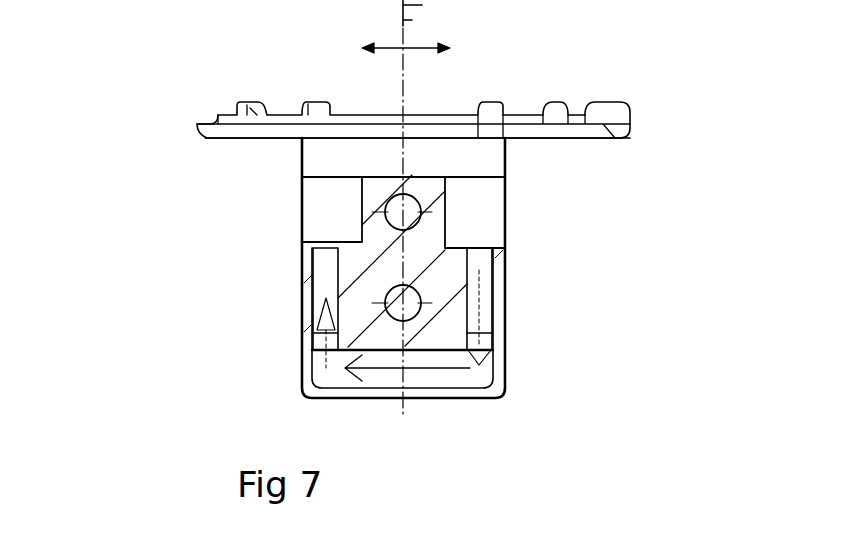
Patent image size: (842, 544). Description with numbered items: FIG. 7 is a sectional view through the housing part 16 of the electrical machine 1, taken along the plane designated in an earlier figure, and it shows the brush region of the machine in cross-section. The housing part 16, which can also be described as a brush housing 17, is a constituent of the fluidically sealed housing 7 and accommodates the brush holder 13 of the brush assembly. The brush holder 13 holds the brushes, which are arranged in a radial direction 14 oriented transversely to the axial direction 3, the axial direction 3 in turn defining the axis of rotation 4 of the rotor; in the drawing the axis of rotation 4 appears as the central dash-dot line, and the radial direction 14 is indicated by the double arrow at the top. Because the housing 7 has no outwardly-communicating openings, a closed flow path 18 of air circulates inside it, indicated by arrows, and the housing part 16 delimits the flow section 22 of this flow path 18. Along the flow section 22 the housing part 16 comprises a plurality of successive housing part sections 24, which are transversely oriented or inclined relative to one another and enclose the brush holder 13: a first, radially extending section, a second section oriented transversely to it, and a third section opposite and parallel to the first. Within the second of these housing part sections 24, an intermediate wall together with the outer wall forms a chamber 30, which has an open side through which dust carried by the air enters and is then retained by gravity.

The electrical machine 1 is at (125, 40).
The axial direction 3 is at (447, 13).
The axis of rotation 4 is at (447, 13).
The housing 7 is at (200, 262).
The brush holder 13 is at (435, 246).
The radial direction 14 is at (422, 52).
The housing part 16 is at (502, 268).
The brush housing 17 is at (549, 341).
The flow path 18 is at (473, 360).
The flow section 22 is at (482, 312).
The housing part section 24 is at (514, 364).
The chamber 30 is at (426, 378).